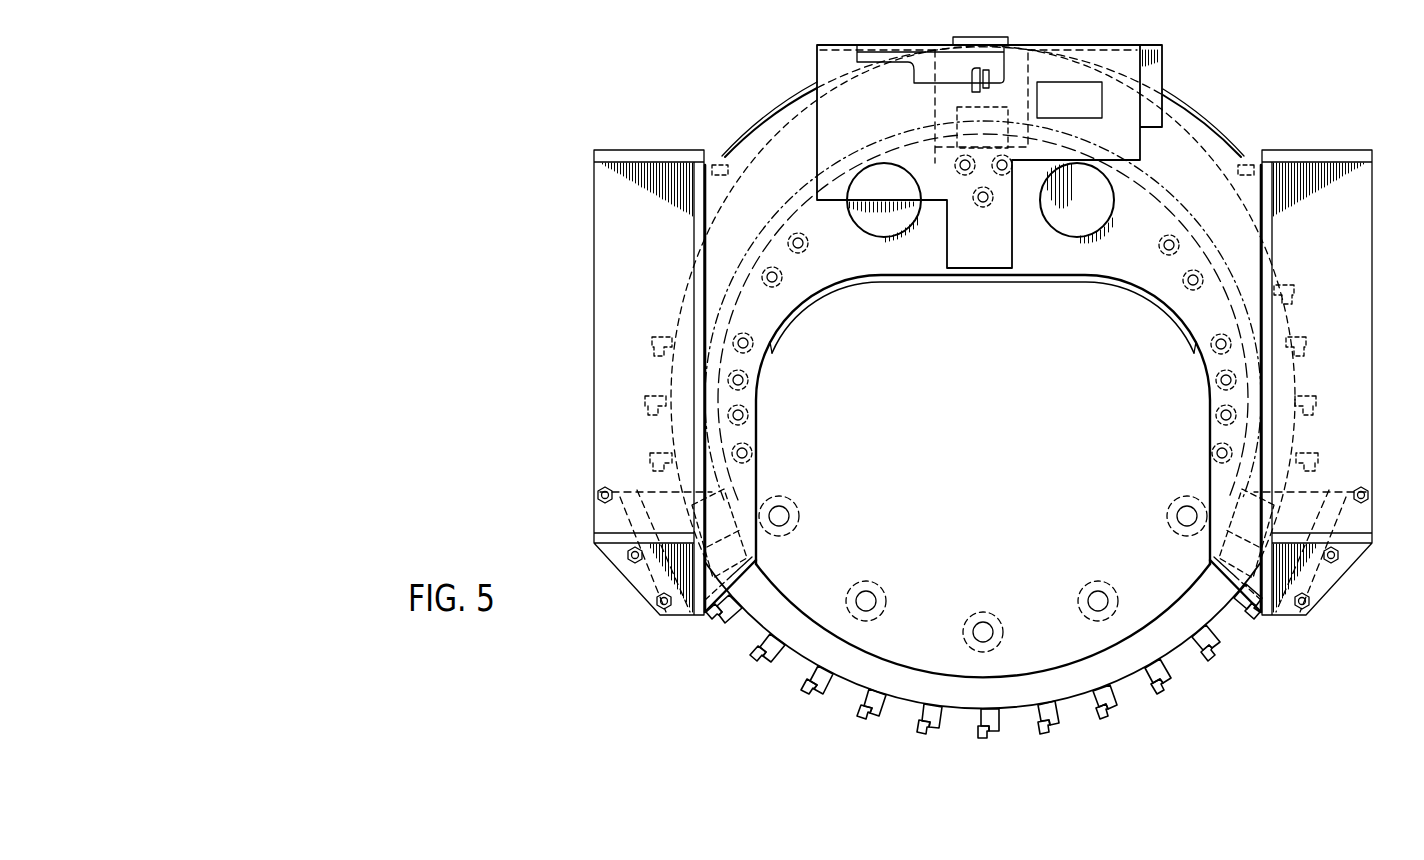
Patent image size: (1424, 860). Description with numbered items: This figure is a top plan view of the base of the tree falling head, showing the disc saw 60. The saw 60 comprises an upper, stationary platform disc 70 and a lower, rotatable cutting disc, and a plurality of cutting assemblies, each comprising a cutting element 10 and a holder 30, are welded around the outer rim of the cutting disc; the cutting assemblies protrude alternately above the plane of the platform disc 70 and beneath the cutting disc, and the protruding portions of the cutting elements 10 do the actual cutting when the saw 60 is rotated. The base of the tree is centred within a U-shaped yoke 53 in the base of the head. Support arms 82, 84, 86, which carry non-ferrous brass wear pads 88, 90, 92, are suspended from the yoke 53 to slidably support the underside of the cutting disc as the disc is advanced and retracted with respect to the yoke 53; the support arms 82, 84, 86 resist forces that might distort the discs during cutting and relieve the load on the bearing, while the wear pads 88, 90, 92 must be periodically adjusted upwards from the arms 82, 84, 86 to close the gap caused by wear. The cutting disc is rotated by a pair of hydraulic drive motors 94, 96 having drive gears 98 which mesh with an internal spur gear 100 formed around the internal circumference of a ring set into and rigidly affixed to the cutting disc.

The cutting element 10 is at (1158, 684).
The holder 30 is at (1162, 690).
The yoke 53 is at (1340, 223).
The saw 60 is at (877, 673).
The platform disc 70 is at (898, 450).
The support arm 82 is at (730, 557).
The support arm 84 is at (1209, 565).
The support arm 86 is at (828, 82).
The wear pad 88 is at (727, 520).
The wear pad 90 is at (1237, 520).
The wear pad 92 is at (960, 93).
The hydraulic drive motor 94 is at (1062, 222).
The hydraulic drive motor 96 is at (893, 222).
The drive gear 98 is at (1052, 178).
The internal spur gear 100 is at (1172, 208).